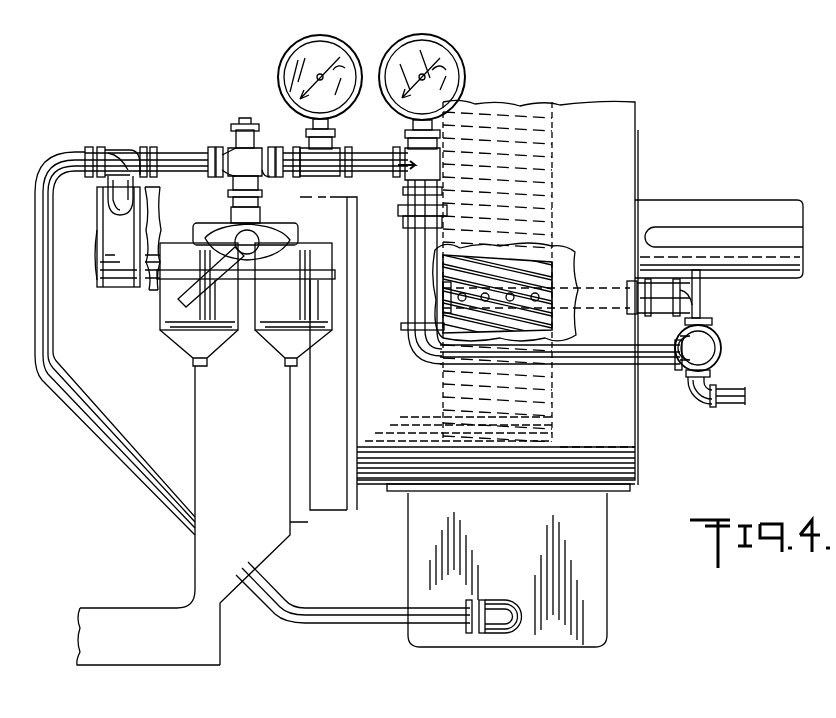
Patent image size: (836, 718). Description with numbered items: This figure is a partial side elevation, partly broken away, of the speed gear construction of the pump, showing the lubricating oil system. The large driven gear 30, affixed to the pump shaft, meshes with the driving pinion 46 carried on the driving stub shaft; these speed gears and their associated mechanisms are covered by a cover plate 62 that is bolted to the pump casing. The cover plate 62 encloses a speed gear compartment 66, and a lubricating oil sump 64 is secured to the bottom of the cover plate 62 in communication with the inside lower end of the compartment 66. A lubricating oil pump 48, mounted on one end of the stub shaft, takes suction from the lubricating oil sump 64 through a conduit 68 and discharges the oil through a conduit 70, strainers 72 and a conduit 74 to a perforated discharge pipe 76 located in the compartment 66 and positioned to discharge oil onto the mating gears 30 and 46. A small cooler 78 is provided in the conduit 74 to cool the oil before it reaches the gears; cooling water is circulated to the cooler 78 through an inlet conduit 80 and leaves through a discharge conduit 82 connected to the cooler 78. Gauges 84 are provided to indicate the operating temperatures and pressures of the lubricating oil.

The driven gear 30 is at (530, 112).
The driving pinion 46 is at (545, 205).
The lubricating oil pump 48 is at (117, 286).
The cover plate 62 is at (637, 432).
The lubricating oil sump 64 is at (600, 542).
The speed gear compartment 66 is at (585, 447).
The conduit 68 is at (150, 484).
The conduit 70 is at (172, 154).
The strainers 72 is at (276, 338).
The conduit 74 is at (372, 160).
The perforated discharge pipe 76 is at (562, 294).
The cooler 78 is at (720, 346).
The inlet conduit 80 is at (700, 294).
The conduit 82 is at (735, 393).
The gauges 84 is at (396, 46).